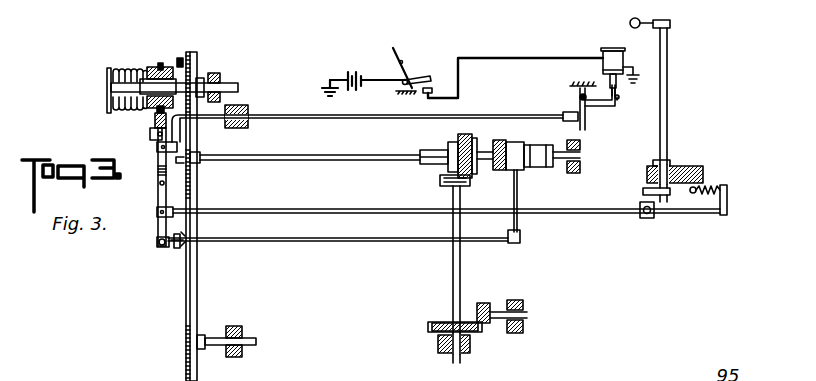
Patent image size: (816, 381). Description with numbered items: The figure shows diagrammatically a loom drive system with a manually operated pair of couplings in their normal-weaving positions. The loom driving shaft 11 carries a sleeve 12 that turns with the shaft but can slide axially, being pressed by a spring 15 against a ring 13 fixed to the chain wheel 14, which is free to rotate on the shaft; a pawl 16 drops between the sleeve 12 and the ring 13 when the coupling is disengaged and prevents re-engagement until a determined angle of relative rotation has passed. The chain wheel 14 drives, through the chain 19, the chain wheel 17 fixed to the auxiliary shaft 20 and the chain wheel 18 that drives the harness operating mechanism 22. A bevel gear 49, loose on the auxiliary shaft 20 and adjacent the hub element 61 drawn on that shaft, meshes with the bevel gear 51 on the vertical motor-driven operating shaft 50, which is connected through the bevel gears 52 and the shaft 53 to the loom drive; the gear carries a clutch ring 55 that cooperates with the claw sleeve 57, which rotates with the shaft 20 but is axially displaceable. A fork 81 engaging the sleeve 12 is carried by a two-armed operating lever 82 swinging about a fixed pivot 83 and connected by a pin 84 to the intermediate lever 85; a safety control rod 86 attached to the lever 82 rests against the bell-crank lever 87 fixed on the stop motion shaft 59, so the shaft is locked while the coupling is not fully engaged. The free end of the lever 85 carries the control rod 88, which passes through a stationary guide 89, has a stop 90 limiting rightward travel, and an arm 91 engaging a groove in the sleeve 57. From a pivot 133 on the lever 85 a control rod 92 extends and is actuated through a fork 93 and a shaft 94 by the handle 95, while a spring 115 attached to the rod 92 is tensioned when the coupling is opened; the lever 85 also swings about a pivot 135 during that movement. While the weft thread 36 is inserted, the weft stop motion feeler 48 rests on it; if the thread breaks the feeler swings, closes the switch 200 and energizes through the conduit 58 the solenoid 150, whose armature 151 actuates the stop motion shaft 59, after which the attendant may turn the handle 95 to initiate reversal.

The shaft 11 is at (230, 85).
The sleeve 12 is at (152, 66).
The ring 13 is at (190, 110).
The chain wheel 14 is at (198, 67).
The spring 15 is at (134, 68).
The pawl 16 is at (181, 57).
The chain wheel 17 is at (194, 182).
The chain wheel 18 is at (190, 339).
The chain 19 is at (187, 302).
The auxiliary shaft 20 is at (293, 158).
The harness operating mechanism 22 is at (242, 342).
The weft thread 36 is at (404, 62).
The weft stop motion feeler 48 is at (392, 62).
The bevel gear 49 is at (458, 140).
The operating shaft 50 is at (462, 266).
The bevel gear 51 is at (440, 179).
The bevel gears 52 is at (466, 321).
The shaft 53 is at (497, 306).
The clutch ring 55 is at (498, 142).
The claw sleeve 57 is at (515, 141).
The conduit 58 is at (447, 100).
The stop motion shaft 59 is at (578, 98).
The gear hub 61 is at (425, 149).
The fork 81 is at (150, 118).
The operating lever 82 is at (150, 134).
The pivot 83 is at (157, 148).
The pin 84 is at (159, 183).
The intermediate lever 85 is at (158, 195).
The safety control rod 86 is at (295, 118).
The bell-crank lever 87 is at (588, 119).
The control rod 88 is at (300, 243).
The stationary guide 89 is at (182, 256).
The stop 90 is at (175, 250).
The arm 91 is at (520, 186).
The control rod 92 is at (293, 213).
The fork 93 is at (643, 190).
The shaft 94 is at (667, 61).
The handle 95 is at (630, 23).
The spring 115 is at (715, 186).
The pivot 133 is at (157, 213).
The pivot 135 is at (157, 243).
The solenoid 150 is at (616, 50).
The armature 151 is at (620, 91).
The switch 200 is at (438, 81).